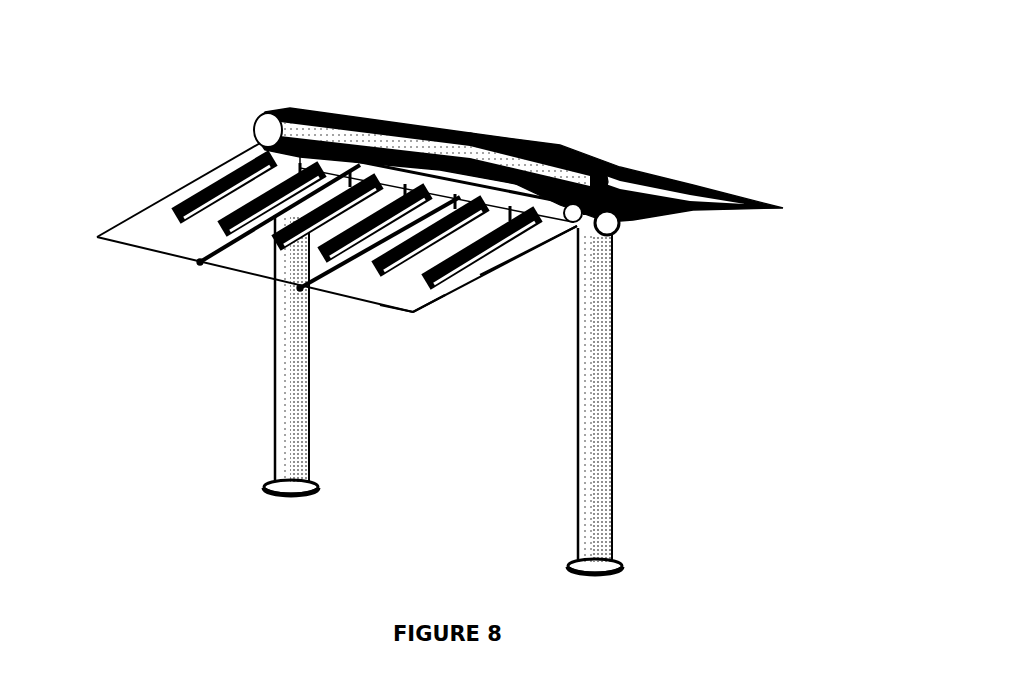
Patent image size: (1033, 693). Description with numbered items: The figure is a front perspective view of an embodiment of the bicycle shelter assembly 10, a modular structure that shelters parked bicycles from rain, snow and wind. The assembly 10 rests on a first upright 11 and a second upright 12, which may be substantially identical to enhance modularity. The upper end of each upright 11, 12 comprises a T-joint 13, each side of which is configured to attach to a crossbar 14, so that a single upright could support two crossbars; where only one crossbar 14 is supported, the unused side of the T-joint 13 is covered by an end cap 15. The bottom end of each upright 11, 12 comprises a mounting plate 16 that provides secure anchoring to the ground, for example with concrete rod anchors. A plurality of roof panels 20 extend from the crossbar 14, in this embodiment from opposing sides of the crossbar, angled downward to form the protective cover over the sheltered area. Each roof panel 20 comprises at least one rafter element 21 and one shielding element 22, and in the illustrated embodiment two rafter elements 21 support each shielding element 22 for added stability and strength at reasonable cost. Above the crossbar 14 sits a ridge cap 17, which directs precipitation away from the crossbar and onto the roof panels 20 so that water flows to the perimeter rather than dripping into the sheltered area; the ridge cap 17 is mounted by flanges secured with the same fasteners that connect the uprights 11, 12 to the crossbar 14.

The shelter assembly 10 is at (170, 110).
The first upright 11 is at (274, 358).
The second upright 12 is at (598, 378).
The T-joint 13 is at (595, 210).
The crossbar 14 is at (430, 148).
The end cap 15 is at (628, 233).
The mounting plate 16 is at (618, 560).
The ridge cap 17 is at (310, 110).
The roof panel 20 is at (150, 233).
The rafter element 21 is at (503, 263).
The shielding element 22 is at (398, 300).